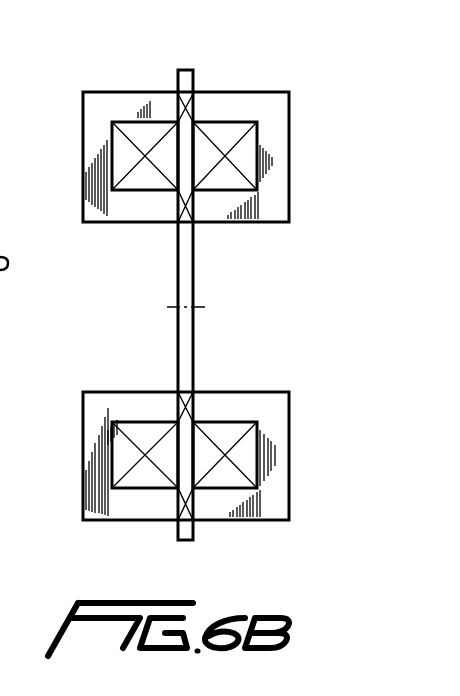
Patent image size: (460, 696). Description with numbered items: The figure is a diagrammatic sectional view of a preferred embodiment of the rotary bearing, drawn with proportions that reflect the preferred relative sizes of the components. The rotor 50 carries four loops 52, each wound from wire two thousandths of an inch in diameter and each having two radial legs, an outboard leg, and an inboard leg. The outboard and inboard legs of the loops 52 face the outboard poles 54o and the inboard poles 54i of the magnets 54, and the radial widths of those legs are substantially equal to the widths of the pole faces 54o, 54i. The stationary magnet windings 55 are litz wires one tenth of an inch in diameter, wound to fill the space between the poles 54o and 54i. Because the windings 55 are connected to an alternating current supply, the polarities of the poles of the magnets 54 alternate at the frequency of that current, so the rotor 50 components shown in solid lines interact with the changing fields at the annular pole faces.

The rotor 50 is at (177, 287).
The loops 52 is at (178, 225).
The magnets 54 is at (253, 96).
The outboard poles 54o is at (212, 96).
The inboard poles 54i is at (214, 214).
The stationary magnet windings 55 is at (234, 182).